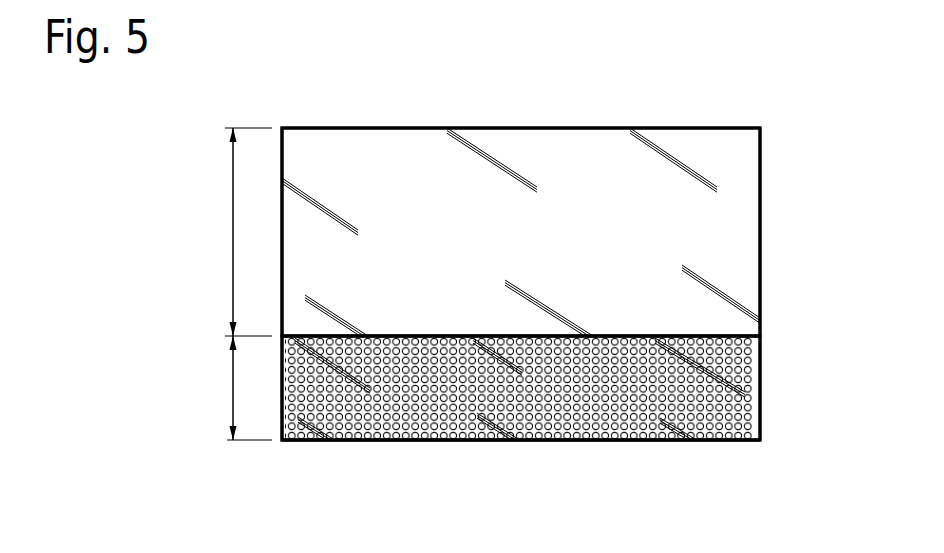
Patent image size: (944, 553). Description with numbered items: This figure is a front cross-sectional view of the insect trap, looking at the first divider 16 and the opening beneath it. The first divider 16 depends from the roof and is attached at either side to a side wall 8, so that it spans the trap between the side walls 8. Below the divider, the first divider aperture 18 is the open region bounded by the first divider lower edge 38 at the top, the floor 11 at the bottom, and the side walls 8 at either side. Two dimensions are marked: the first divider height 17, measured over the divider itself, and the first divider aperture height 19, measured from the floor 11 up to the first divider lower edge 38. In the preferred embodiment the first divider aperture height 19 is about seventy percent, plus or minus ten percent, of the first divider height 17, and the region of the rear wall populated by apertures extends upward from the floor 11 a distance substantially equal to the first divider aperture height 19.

The side walls 8 is at (760, 290).
The floor 11 is at (596, 441).
The first divider 16 is at (745, 218).
The first divider height 17 is at (233, 184).
The first divider aperture 18 is at (745, 390).
The first divider aperture height 19 is at (233, 370).
The first divider lower edge 38 is at (670, 336).